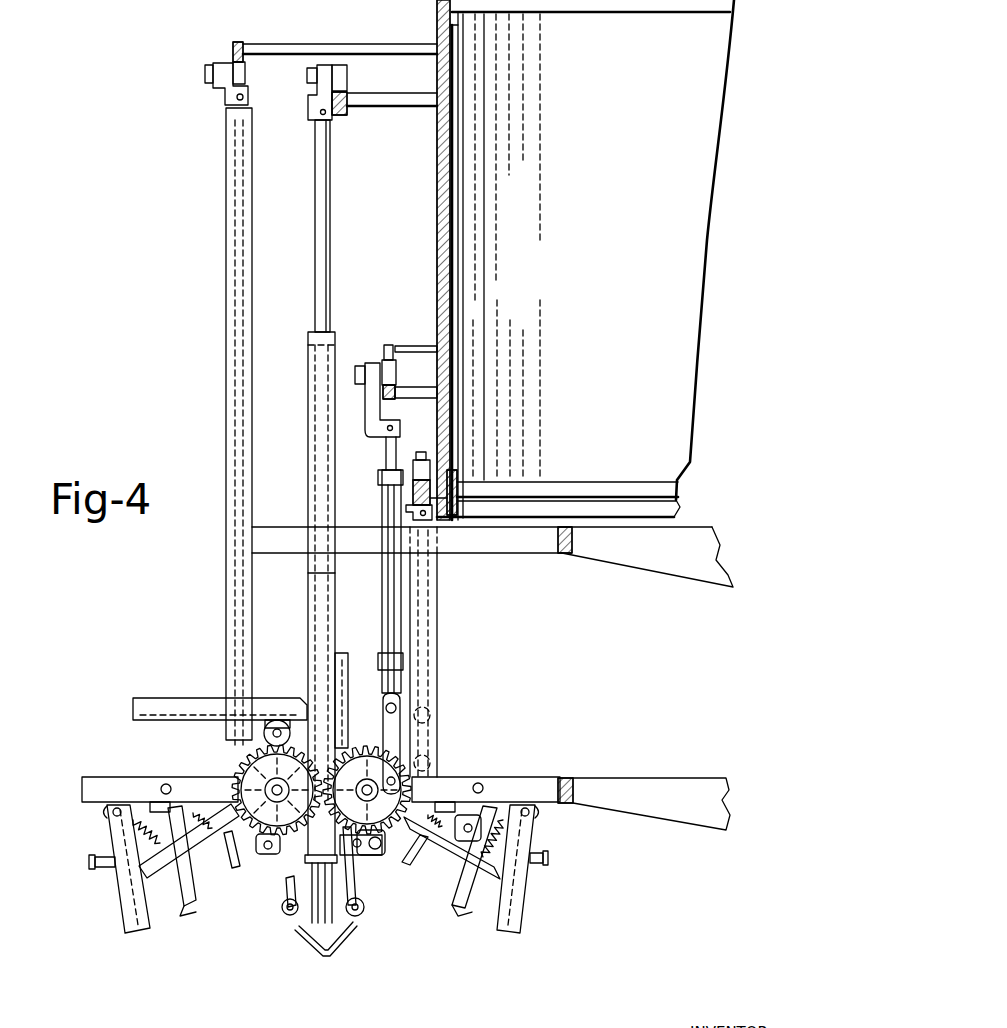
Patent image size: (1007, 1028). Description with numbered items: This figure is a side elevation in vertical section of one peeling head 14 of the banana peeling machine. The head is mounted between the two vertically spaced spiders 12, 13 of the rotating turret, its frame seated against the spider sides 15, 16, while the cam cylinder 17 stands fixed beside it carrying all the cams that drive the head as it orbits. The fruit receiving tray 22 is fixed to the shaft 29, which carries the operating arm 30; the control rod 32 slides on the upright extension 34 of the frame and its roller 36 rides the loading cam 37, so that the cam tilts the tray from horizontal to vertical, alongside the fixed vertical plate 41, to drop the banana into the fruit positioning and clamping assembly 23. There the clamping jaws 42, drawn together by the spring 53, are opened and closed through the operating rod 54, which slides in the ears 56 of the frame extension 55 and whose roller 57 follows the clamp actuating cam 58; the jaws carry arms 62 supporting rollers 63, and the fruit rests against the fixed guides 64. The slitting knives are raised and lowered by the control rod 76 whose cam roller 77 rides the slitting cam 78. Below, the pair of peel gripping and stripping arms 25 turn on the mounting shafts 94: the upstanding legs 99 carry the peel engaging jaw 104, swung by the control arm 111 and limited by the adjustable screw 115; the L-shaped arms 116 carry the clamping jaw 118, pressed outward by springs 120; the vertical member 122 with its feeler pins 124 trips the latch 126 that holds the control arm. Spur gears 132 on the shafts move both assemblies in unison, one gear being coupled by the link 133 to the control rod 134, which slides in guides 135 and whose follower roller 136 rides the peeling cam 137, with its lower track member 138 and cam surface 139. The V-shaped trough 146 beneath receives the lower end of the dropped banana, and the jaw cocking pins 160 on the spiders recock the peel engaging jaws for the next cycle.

The spider 12 is at (624, 780).
The spider 13 is at (614, 558).
The peeling head 14 is at (234, 968).
The side of spider 15 is at (560, 780).
The side of spider 16 is at (562, 554).
The cam cylinder 17 is at (437, 251).
The fruit receiving tray 22 is at (196, 697).
The fruit positioning and clamping assembly 23 is at (405, 860).
The peel gripping and stripping arm 25 is at (118, 899).
The shaft 29 is at (274, 719).
The operating arm 30 is at (258, 742).
The control rod 32 is at (228, 620).
The upright extension 34 is at (226, 375).
The cam follower roller 36 is at (245, 78).
The loading cam 37 is at (238, 42).
The fixed vertical plate 41 is at (350, 670).
The clamping and positioning jaw 42 is at (288, 882).
The spring 53 is at (432, 775).
The operating rod 54 is at (432, 622).
The extension 55 is at (438, 672).
The ear 56 is at (431, 718).
The roller 57 is at (421, 460).
The clamp actuating cam 58 is at (457, 475).
The arm 62 is at (282, 907).
The roller 63 is at (290, 926).
The fixed guide 64 is at (297, 933).
The control rod 76 is at (331, 208).
The cam roller 77 is at (348, 80).
The slitting cam 78 is at (340, 115).
The mounting shaft 94 is at (271, 790).
The upstanding leg 99 is at (174, 866).
The peel engaging jaw 104 is at (126, 920).
The control arm 111 is at (321, 789).
The adjustable screw 115 is at (94, 862).
The L-shaped arm 116 is at (186, 884).
The clamping jaw 118 is at (182, 908).
The spring 120 is at (114, 816).
The vertical member 122 is at (216, 860).
The feeler pin 124 is at (240, 865).
The latch 126 is at (172, 806).
The spur gear 132 is at (302, 762).
The link 133 is at (401, 752).
The control rod 134 is at (400, 590).
The guide 135 is at (380, 484).
The cam follower roller 136 is at (397, 368).
The peeling cam 137 is at (418, 376).
The lower track member 138 is at (390, 402).
The cam surface 139 is at (386, 345).
The V-shaped trough 146 is at (340, 958).
The jaw cocking pin 160 is at (166, 784).